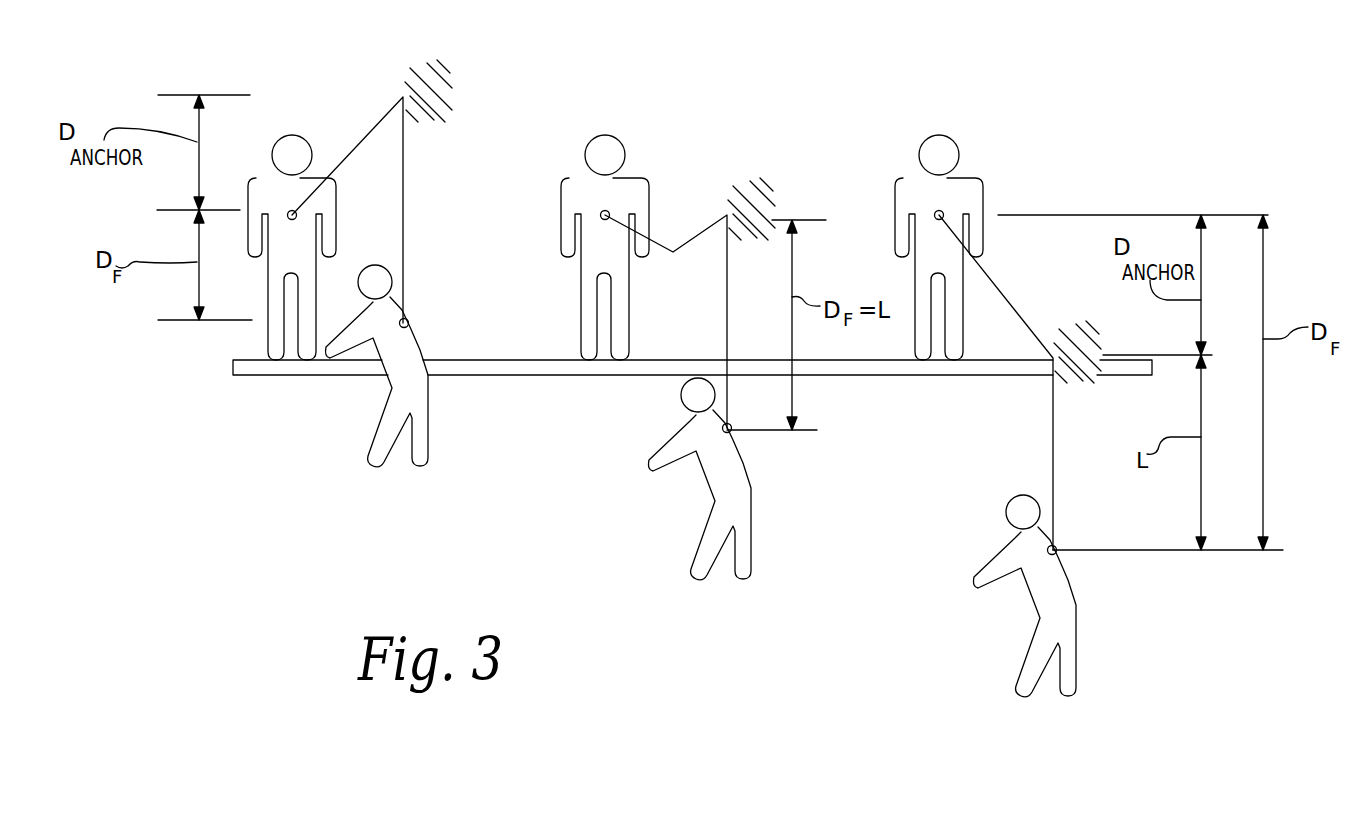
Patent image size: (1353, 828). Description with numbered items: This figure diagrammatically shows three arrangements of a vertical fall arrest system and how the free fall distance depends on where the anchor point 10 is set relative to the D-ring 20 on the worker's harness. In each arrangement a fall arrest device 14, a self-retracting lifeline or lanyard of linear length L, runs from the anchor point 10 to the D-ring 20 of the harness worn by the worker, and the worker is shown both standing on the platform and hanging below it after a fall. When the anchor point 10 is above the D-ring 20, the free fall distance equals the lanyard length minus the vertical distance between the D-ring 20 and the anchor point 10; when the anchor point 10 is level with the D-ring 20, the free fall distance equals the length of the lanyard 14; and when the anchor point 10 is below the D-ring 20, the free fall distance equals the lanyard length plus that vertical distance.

The anchor point 10 is at (403, 97).
The fall arrest device 14 is at (351, 136).
The D-ring 20 is at (288, 207).